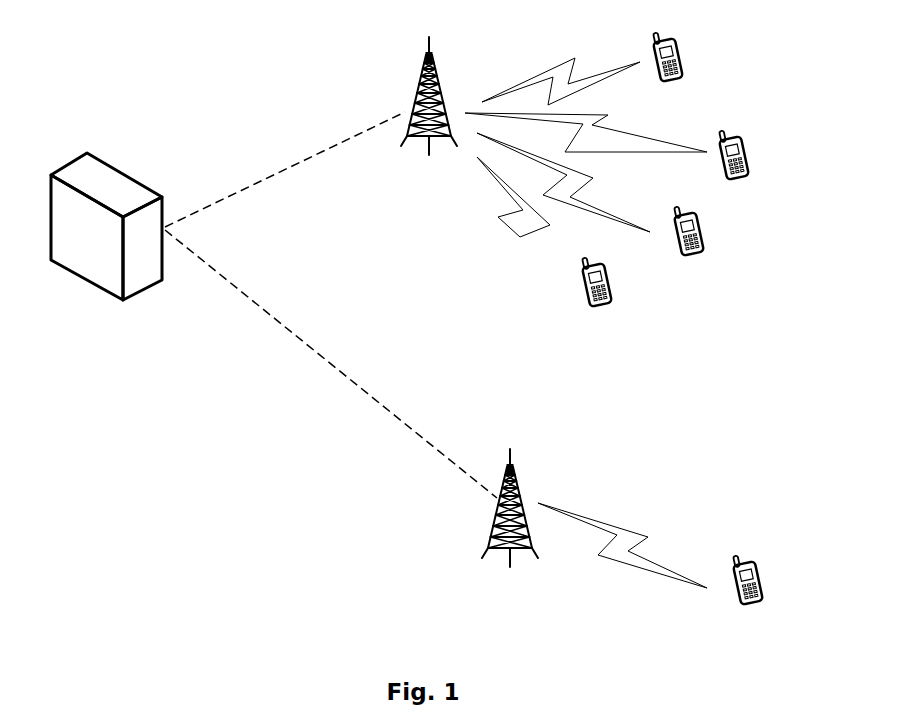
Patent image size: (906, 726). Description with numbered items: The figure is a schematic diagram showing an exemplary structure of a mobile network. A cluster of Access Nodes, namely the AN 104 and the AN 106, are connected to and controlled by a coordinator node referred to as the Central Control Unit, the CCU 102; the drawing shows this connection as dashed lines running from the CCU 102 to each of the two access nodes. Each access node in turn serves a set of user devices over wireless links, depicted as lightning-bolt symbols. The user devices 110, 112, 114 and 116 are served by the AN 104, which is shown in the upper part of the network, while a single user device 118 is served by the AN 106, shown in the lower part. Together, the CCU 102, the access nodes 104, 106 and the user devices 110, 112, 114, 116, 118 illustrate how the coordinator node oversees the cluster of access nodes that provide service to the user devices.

The Central Control Unit (CCU) 102 is at (106, 267).
The Access Node (AN) 104 is at (429, 134).
The Access Node (AN) 106 is at (510, 545).
The user device 110 is at (670, 75).
The user device 112 is at (727, 170).
The user device 114 is at (690, 249).
The user device 116 is at (597, 299).
The user device 118 is at (748, 598).